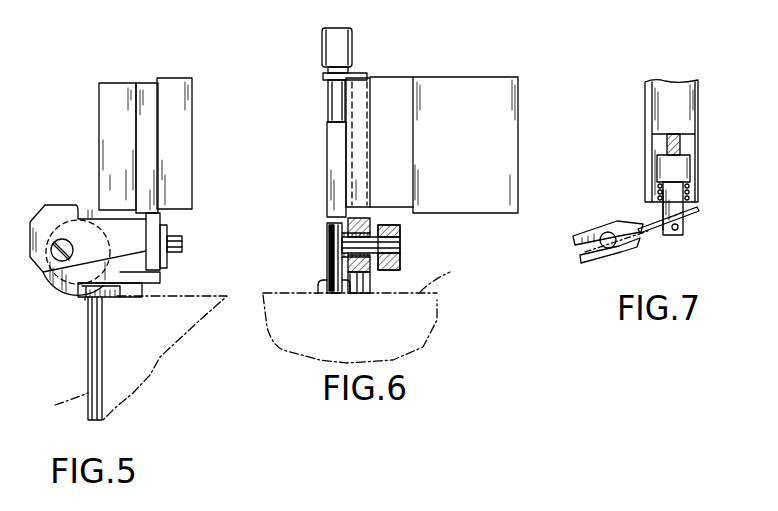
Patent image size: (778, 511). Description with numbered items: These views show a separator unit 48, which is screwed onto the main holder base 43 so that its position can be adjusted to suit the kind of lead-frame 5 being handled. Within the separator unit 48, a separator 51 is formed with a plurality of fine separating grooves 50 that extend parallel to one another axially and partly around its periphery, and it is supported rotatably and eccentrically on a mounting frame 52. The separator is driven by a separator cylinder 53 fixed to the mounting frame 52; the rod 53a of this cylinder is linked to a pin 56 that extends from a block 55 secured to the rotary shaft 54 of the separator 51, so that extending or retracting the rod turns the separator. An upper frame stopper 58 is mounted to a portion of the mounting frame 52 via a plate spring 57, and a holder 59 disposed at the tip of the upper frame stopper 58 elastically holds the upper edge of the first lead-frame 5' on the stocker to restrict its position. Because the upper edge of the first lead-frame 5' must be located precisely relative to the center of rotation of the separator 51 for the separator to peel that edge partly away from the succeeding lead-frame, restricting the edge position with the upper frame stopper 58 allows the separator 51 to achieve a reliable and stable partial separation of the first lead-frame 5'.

In FIG. 5, the lead-frame 5 is at (112, 358).
In FIG. 5, the first lead-frame 5' is at (132, 358).
In FIG. 6, the first lead-frame 5' is at (371, 312).
In FIG. 5, the main holder base 43 is at (187, 137).
In FIG. 5, the separator unit 48 is at (178, 30).
In FIG. 6, the separator unit 48 is at (466, 20).
In FIG. 6, the fine separating grooves 50 is at (320, 290).
In FIG. 5, the separator 51 is at (58, 300).
In FIG. 6, the separator 51 is at (328, 250).
In FIG. 5, the mounting frame 52 is at (93, 220).
In FIG. 6, the mounting frame 52 is at (332, 164).
In FIG. 7, the mounting frame 52 is at (688, 143).
In FIG. 7, the separator cylinder 53 is at (657, 103).
In FIG. 7, the rod 53a is at (667, 197).
In FIG. 6, the rotary shaft 54 is at (397, 245).
In FIG. 7, the rotary shaft 54 is at (608, 250).
In FIG. 6, the block 55 is at (390, 272).
In FIG. 7, the block 55 is at (635, 247).
In FIG. 7, the pin 56 is at (693, 215).
In FIG. 5, the plate spring 57 is at (167, 280).
In FIG. 6, the plate spring 57 is at (360, 284).
In FIG. 5, the upper frame stopper 58 is at (115, 290).
In FIG. 6, the upper frame stopper 58 is at (370, 290).
In FIG. 5, the holder 59 is at (85, 298).